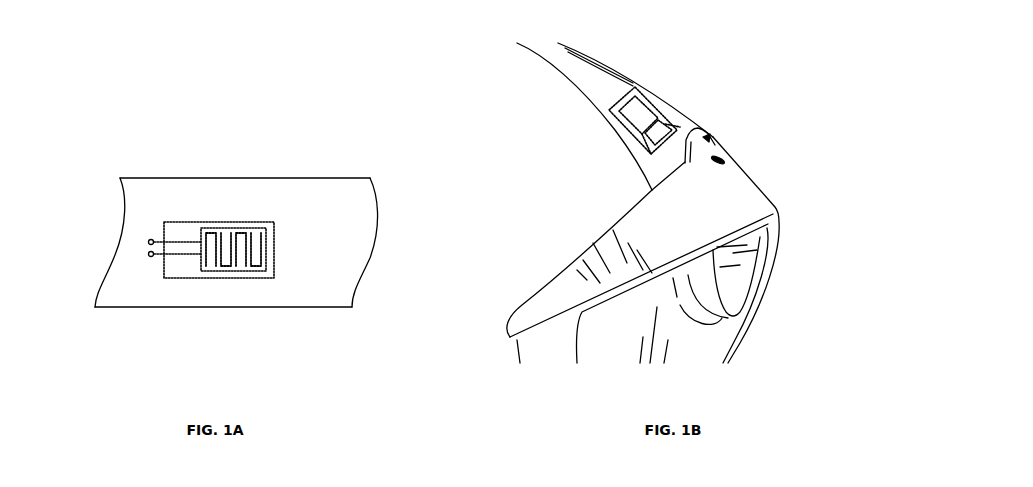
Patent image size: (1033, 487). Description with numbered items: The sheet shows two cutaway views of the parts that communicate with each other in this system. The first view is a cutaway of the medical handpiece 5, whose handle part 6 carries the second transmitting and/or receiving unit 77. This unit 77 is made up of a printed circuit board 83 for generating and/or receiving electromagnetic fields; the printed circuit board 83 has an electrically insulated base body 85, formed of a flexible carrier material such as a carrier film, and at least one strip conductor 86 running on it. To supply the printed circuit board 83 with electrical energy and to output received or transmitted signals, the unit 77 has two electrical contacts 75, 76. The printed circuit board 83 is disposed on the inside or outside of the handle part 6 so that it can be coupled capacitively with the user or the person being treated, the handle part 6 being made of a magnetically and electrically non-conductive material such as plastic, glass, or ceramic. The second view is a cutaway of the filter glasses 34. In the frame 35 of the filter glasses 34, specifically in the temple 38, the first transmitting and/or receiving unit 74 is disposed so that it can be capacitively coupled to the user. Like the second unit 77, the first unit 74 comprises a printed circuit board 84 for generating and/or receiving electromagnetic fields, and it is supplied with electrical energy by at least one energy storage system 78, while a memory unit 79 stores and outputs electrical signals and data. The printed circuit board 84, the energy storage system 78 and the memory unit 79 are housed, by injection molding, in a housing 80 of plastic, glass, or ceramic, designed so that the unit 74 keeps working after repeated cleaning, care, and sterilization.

In FIG. 1A, the medical handpiece 5 is at (222, 193).
In FIG. 1A, the handle part 6 is at (287, 178).
In FIG. 1A, the electrical contact 75 is at (150, 239).
In FIG. 1A, the electrical contact 76 is at (152, 257).
In FIG. 1A, the second transmitting and/or receiving unit 77 is at (207, 278).
In FIG. 1A, the printed circuit board 83 is at (239, 227).
In FIG. 1A, the electrically insulated base body 85 is at (263, 262).
In FIG. 1A, the strip conductor 86 is at (250, 265).
In FIG. 1B, the temple 38 is at (603, 92).
In FIG. 1B, the filter glasses 34 is at (678, 235).
In FIG. 1B, the frame 35 is at (740, 188).
In FIG. 1B, the first transmitting and/or receiving unit 74 is at (647, 97).
In FIG. 1B, the printed circuit board 84 is at (648, 108).
In FIG. 1B, the memory unit 79 is at (663, 122).
In FIG. 1B, the housing 80 is at (680, 127).
In FIG. 1B, the energy storage system 78 is at (648, 135).